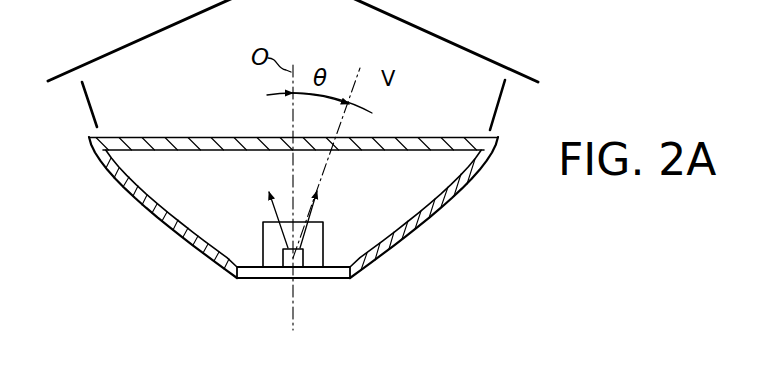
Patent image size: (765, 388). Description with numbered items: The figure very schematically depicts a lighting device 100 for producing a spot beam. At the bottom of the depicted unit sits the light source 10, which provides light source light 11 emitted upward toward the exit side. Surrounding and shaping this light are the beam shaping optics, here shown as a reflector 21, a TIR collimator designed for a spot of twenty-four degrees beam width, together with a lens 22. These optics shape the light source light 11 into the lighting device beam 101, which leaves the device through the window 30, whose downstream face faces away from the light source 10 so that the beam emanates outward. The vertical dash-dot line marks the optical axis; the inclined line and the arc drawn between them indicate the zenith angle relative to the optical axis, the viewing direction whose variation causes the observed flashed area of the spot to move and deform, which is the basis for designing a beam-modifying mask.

The lighting device 100 is at (282, 177).
The lighting device beam 101 is at (448, 50).
The light source 10 is at (284, 263).
The light source light 11 is at (313, 212).
The reflector 21 is at (457, 200).
The lens 22 is at (254, 237).
The window 30 is at (449, 145).